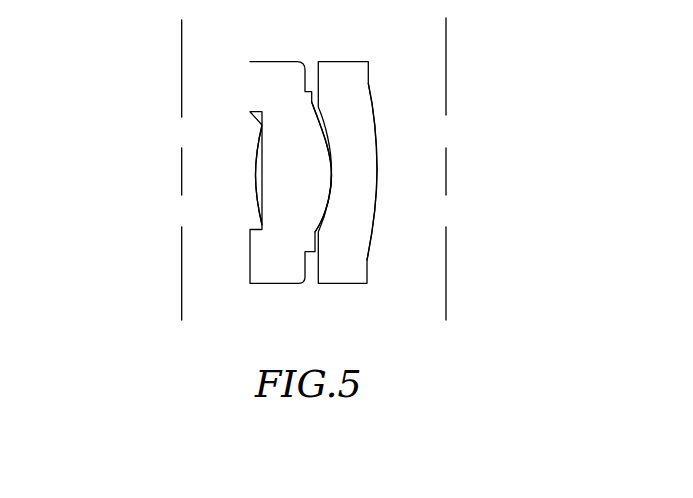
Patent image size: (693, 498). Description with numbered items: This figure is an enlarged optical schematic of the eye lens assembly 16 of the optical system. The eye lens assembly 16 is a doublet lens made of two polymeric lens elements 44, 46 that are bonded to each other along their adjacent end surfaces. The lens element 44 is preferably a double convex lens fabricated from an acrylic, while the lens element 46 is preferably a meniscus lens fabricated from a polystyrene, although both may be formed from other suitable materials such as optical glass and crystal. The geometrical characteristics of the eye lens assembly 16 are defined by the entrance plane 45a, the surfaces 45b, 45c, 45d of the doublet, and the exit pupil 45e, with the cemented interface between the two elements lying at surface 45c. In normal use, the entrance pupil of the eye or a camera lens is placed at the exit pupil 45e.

The eye lens assembly 16 is at (245, 308).
The lens element 44 is at (270, 177).
The lens element 46 is at (362, 165).
The entrance plane 45a is at (181, 77).
The surface 45b is at (258, 140).
The surface 45c is at (329, 202).
The surface 45d is at (377, 207).
The exit pupil 45e is at (447, 290).